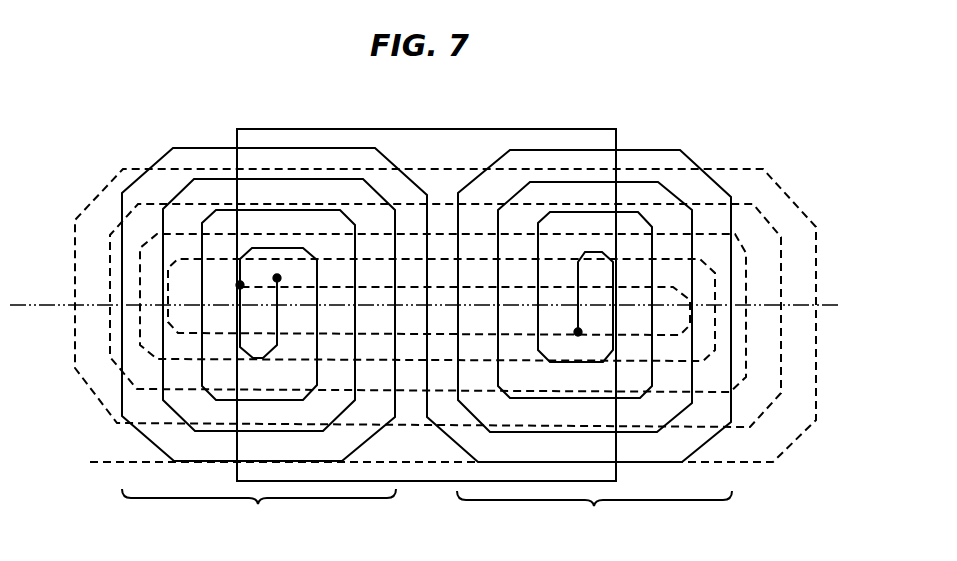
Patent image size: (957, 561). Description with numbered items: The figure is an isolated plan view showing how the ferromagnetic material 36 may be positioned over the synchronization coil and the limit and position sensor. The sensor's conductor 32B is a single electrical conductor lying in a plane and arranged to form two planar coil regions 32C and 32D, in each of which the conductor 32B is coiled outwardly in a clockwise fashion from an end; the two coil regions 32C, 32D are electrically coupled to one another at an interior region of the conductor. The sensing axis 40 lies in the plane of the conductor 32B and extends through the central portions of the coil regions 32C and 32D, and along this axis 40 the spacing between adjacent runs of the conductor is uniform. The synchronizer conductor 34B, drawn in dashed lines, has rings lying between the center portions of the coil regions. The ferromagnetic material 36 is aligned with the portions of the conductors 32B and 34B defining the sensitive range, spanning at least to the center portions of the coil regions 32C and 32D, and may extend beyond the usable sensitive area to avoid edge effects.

The conductor 32B is at (283, 148).
The conductor 34B is at (445, 169).
The ferromagnetic material 36 is at (567, 129).
The sensing axis 40 is at (833, 305).
The coil region 32C is at (258, 502).
The coil region 32D is at (594, 504).